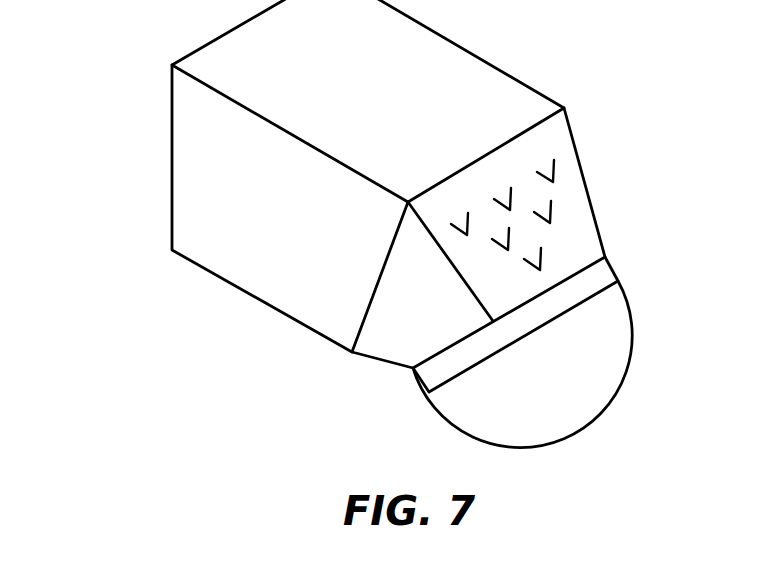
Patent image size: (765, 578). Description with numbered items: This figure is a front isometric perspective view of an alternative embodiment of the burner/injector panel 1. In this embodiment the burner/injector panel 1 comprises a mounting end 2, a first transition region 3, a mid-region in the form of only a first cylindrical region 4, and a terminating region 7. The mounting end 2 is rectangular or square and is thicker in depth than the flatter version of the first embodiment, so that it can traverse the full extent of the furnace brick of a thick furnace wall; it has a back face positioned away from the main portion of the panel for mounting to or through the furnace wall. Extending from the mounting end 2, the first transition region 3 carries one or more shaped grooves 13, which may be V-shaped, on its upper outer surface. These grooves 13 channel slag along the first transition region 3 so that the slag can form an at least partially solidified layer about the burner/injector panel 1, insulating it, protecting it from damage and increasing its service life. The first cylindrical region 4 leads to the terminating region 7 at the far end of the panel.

The burner/injector panel 1 is at (124, 163).
The mounting end 2 is at (440, 35).
The first transition region 3 is at (592, 205).
The first cylindrical region 4 is at (613, 268).
The terminating region 7 is at (637, 336).
The shaped grooves 13 is at (555, 172).